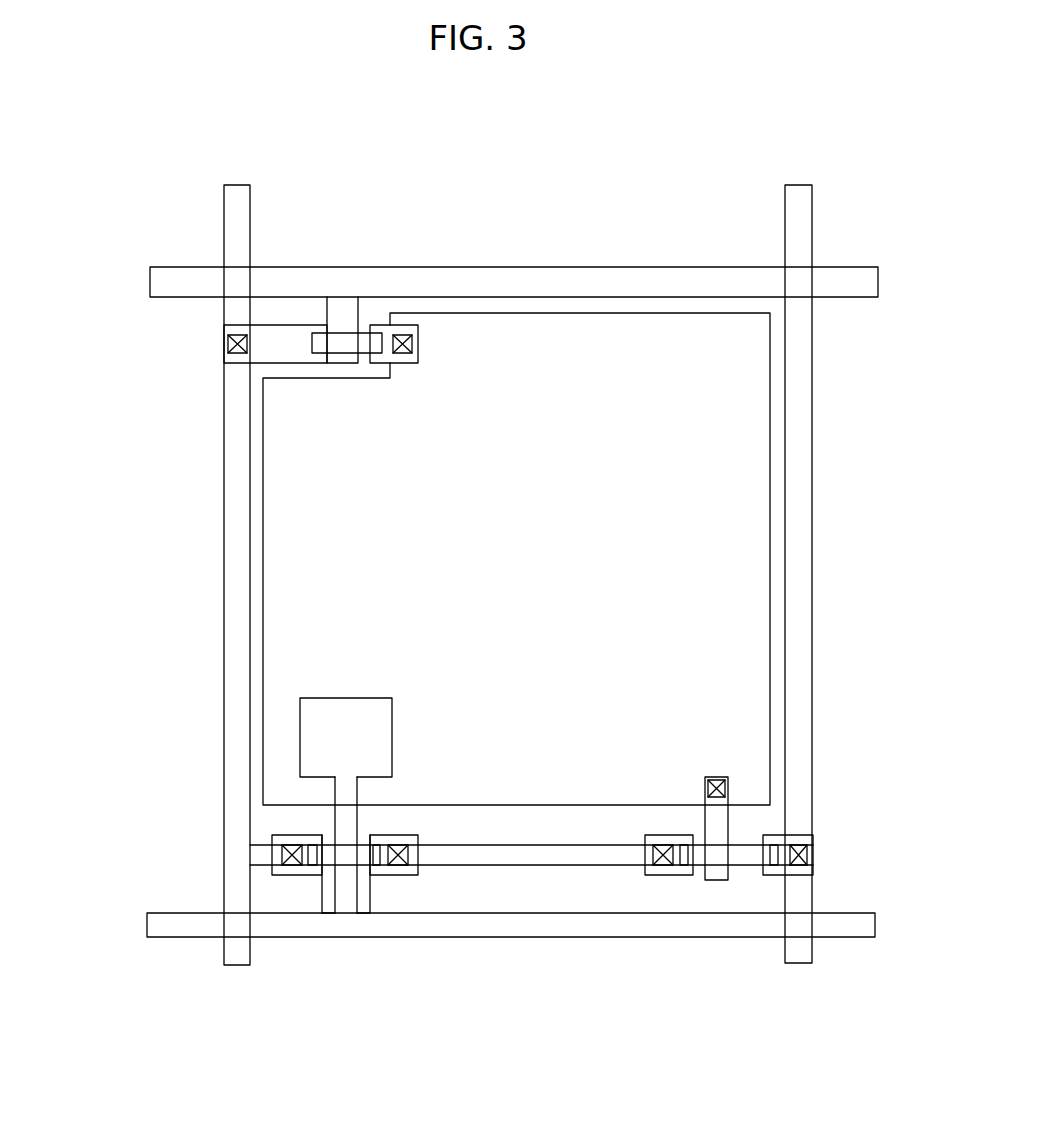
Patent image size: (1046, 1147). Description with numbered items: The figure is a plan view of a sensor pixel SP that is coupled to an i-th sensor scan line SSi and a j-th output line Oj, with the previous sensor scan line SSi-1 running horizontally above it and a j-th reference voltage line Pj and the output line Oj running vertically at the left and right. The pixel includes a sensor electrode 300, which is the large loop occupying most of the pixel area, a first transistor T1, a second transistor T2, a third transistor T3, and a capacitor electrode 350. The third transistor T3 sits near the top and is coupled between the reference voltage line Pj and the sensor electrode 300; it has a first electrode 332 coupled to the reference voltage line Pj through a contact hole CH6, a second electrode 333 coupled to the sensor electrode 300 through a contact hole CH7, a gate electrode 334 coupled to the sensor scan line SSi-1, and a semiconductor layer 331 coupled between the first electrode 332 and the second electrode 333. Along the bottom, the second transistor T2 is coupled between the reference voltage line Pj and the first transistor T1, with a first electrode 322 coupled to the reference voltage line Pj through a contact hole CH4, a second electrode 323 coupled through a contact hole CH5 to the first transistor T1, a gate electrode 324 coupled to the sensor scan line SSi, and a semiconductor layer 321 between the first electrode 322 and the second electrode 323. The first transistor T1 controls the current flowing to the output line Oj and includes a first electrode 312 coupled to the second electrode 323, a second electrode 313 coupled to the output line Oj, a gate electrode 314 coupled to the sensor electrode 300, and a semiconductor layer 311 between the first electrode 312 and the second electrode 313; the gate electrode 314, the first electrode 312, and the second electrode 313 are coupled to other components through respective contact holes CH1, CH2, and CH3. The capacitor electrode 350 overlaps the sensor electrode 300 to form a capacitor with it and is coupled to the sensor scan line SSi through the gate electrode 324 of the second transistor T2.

The sensor pixel SP is at (714, 122).
The j-th reference voltage line Pj is at (236, 185).
The j-th output line Oj is at (800, 185).
The i-1-th sensor scan line SSi-1 is at (150, 283).
The i-th sensor scan line SSi is at (147, 924).
The sensor electrode 300 is at (770, 540).
The capacitor electrode 350 is at (300, 710).
The third transistor T3 is at (319, 270).
The first electrode of the third transistor 332 is at (273, 325).
The semiconductor layer of the third transistor 331 is at (330, 333).
The gate electrode of the third transistor 334 is at (378, 333).
The second electrode of the third transistor 333 is at (417, 340).
The contact hole CH6 is at (224, 344).
The contact hole CH7 is at (448, 288).
The gate electrode of the first transistor 314 is at (717, 880).
The second transistor T2 is at (369, 942).
The first electrode of the second transistor 322 is at (303, 875).
The semiconductor layer of the second transistor 321 is at (335, 880).
The gate electrode of the second transistor 324 is at (365, 880).
The second electrode of the second transistor 323 is at (402, 875).
The contact hole CH4 is at (292, 875).
The contact hole CH5 is at (453, 920).
The first transistor T1 is at (748, 903).
The first electrode of the first transistor 312 is at (667, 875).
The semiconductor layer of the first transistor 311 is at (704, 878).
The second electrode of the first transistor 313 is at (777, 875).
The contact hole CH1 is at (728, 787).
The contact hole CH2 is at (660, 845).
The contact hole CH3 is at (808, 852).